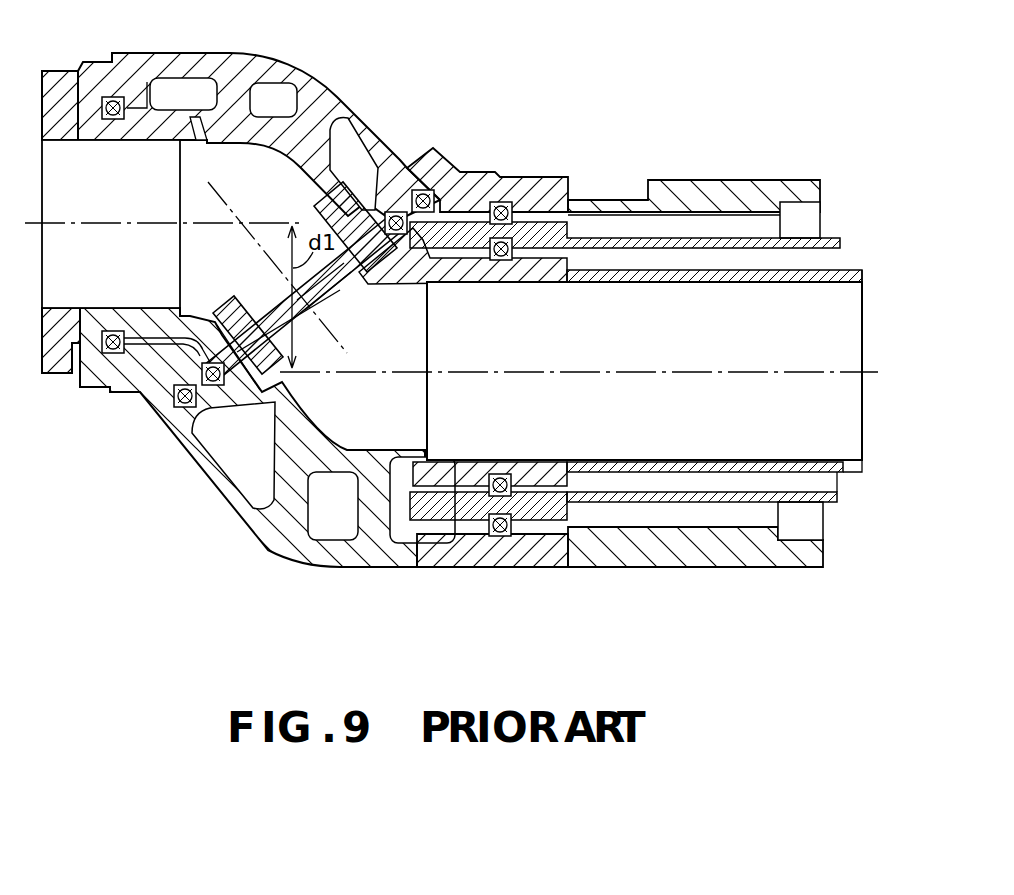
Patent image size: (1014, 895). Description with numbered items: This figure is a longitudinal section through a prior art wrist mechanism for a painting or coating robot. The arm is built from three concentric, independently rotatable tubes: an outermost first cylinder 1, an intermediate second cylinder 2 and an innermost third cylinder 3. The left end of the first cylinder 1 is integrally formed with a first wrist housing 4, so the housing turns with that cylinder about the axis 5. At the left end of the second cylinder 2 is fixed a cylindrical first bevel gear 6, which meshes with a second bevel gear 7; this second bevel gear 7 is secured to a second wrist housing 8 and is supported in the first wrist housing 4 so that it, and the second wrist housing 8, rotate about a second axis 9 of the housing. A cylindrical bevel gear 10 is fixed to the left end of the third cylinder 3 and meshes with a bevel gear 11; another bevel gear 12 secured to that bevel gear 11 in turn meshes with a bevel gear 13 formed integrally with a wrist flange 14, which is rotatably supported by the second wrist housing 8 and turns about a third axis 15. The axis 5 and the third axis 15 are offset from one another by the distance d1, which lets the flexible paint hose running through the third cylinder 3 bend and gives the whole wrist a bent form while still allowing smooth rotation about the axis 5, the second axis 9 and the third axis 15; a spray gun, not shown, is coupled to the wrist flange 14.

The first cylinder 1 is at (722, 190).
The second cylinder 2 is at (793, 243).
The third cylinder 3 is at (827, 277).
The first wrist housing 4 is at (285, 535).
The axis 5 is at (541, 369).
The first bevel gear 6 is at (438, 226).
The second bevel gear 7 is at (372, 262).
The second wrist housing 8 is at (288, 73).
The second axis 9 is at (222, 196).
The cylindrical bevel gear 10 is at (427, 270).
The bevel gear 11 is at (400, 267).
The bevel gear 12 is at (272, 374).
The bevel gear 13 is at (143, 316).
The wrist flange 14 is at (53, 70).
The third axis 15 is at (108, 222).